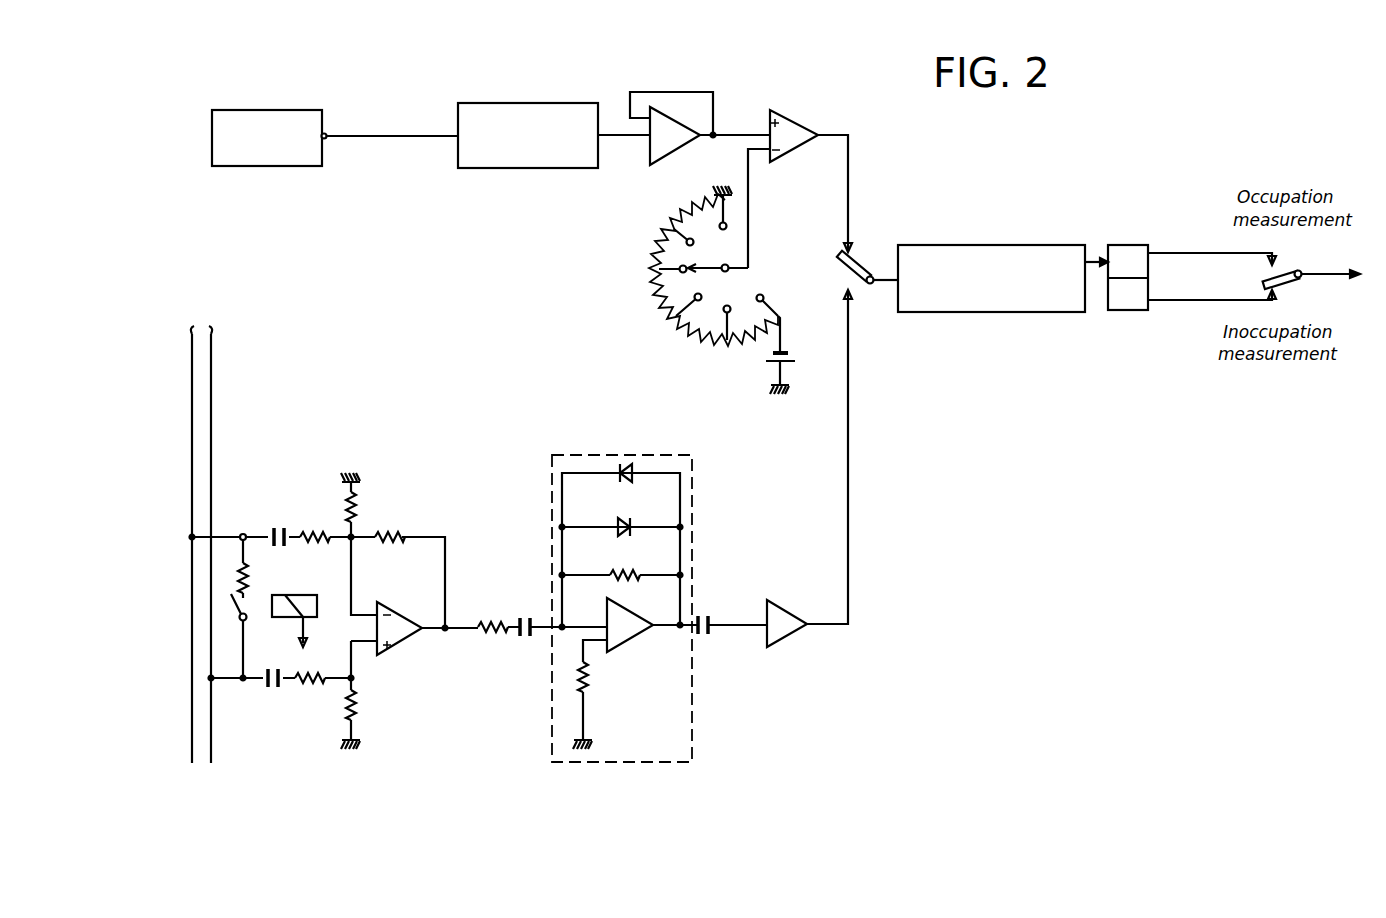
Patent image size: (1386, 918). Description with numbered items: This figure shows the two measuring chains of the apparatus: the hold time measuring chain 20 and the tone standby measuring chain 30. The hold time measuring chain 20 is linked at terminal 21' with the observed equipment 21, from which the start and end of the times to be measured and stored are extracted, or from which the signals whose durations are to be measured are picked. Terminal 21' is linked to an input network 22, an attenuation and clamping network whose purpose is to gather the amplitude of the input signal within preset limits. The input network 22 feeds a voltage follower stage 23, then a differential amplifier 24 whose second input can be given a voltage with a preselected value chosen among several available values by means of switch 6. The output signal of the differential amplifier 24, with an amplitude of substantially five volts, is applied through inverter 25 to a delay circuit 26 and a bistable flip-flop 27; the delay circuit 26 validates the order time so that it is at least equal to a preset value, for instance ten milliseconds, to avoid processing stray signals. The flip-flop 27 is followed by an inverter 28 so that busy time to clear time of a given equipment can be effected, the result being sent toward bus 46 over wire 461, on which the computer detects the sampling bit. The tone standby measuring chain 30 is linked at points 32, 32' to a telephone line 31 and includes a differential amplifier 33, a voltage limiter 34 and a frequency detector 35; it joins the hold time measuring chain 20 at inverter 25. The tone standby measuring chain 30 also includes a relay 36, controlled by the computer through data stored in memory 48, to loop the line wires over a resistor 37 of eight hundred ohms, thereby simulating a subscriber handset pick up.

The switch 6 is at (719, 264).
The hold time measuring chain 20 is at (497, 219).
The observed equipment 21 is at (267, 123).
The terminal 21' is at (390, 124).
The input network 22 is at (512, 103).
The voltage follower stage 23 is at (671, 144).
The differential amplifier 24 is at (800, 131).
The inverter 25 is at (865, 264).
The delay circuit 26 is at (977, 245).
The bistable flip-flop 27 is at (1170, 243).
The inverter 28 is at (1278, 284).
The tone standby measuring chain 30 is at (461, 474).
The telephone line 31 is at (196, 326).
The connection point 32 is at (318, 562).
The connection point 32' is at (281, 694).
The differential amplifier 33 is at (400, 648).
The voltage limiter 34 is at (692, 490).
The frequency detector 35 is at (787, 611).
The relay 36 is at (293, 619).
The resistor 37 is at (248, 585).
The bus 46 is at (1338, 274).
The memory 48 is at (285, 595).
The wire 461 is at (1335, 278).